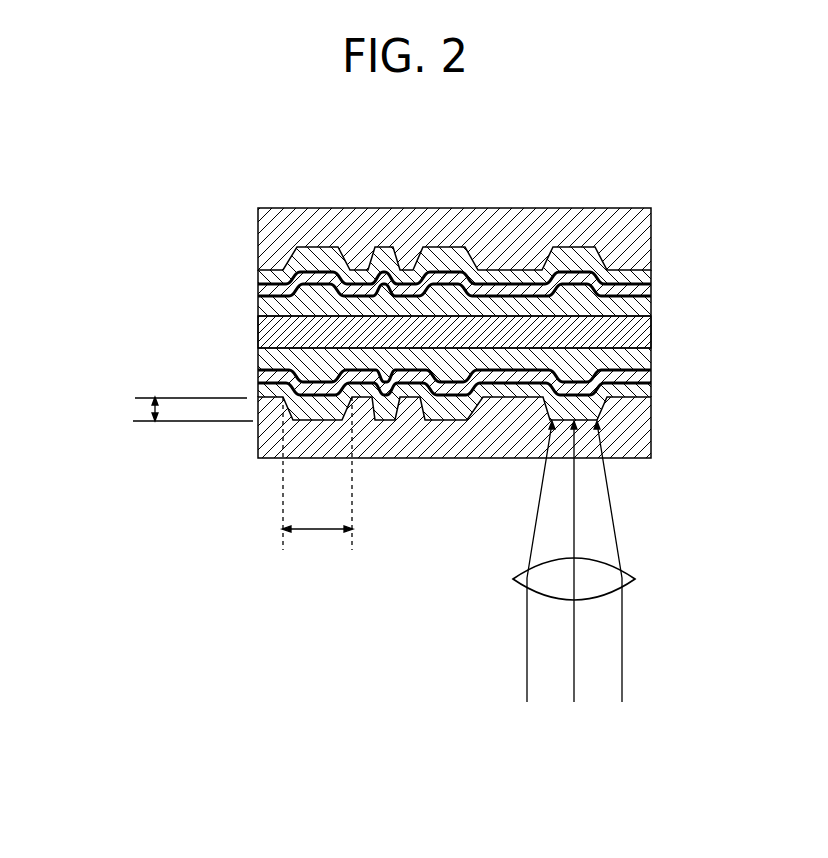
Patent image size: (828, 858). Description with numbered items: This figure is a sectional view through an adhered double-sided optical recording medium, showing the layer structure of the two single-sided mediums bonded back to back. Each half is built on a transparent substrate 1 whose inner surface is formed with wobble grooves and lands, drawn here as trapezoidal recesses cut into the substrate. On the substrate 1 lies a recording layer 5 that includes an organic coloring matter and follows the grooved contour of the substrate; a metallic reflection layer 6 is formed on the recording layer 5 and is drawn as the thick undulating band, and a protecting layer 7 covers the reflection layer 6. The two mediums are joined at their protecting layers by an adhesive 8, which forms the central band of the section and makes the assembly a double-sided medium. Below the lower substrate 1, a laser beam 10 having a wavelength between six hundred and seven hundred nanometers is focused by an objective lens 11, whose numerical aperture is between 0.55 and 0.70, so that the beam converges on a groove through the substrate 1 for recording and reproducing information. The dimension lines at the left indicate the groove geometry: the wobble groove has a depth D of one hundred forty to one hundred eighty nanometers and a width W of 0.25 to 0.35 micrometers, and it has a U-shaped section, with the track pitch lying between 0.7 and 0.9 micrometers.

The transparent substrate 1 is at (632, 231).
The recording layer 5 is at (644, 262).
The metallic reflection layer 6 is at (642, 290).
The protecting layer 7 is at (638, 308).
The adhesive 8 is at (637, 332).
The laser beam 10 is at (613, 522).
The objective lens 11 is at (627, 584).
The depth of the wobble groove D is at (143, 410).
The width of the wobble groove W is at (318, 529).